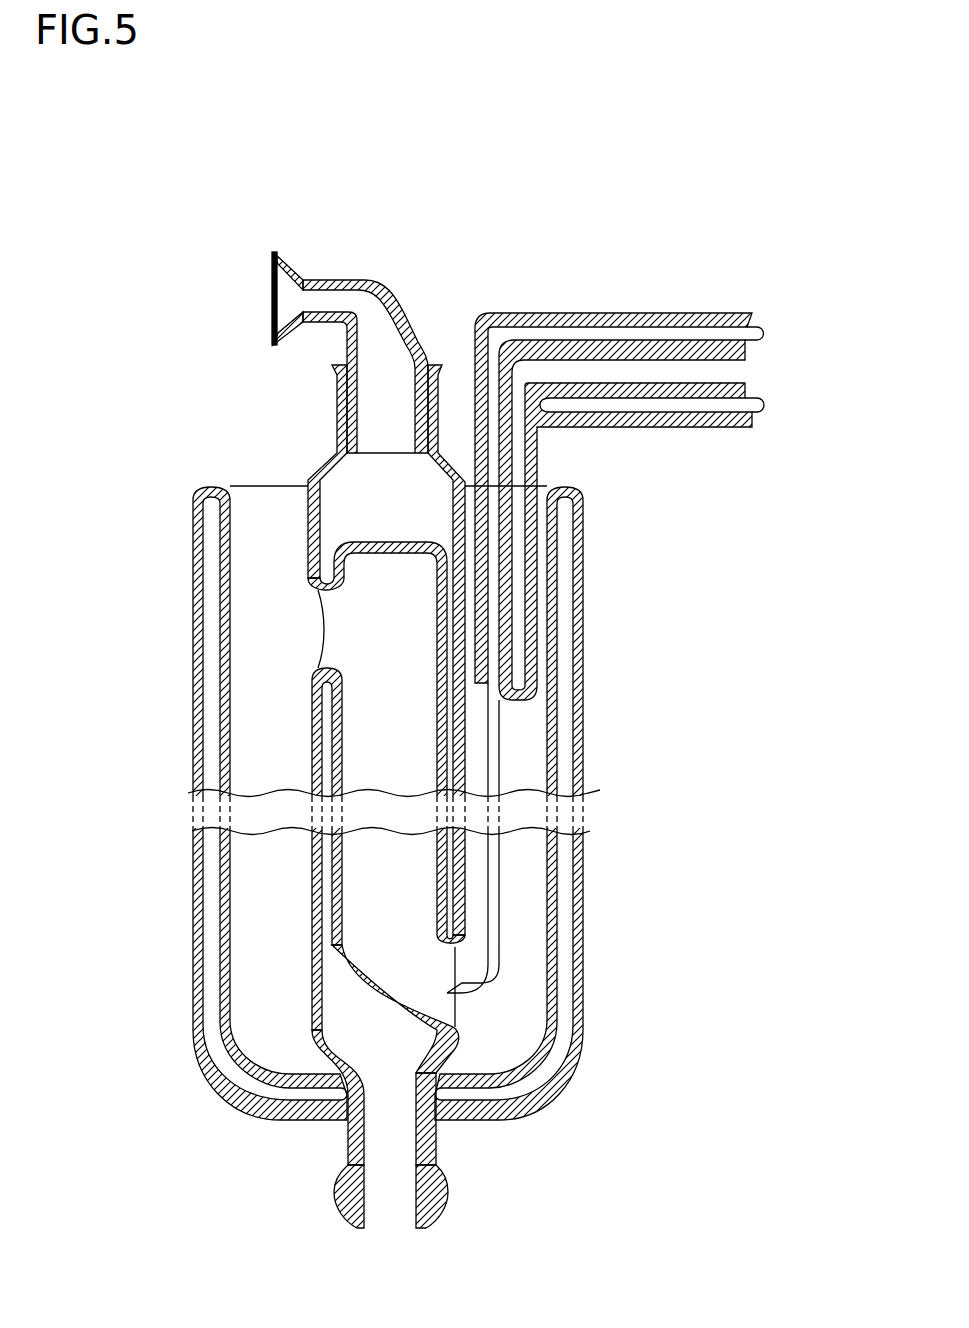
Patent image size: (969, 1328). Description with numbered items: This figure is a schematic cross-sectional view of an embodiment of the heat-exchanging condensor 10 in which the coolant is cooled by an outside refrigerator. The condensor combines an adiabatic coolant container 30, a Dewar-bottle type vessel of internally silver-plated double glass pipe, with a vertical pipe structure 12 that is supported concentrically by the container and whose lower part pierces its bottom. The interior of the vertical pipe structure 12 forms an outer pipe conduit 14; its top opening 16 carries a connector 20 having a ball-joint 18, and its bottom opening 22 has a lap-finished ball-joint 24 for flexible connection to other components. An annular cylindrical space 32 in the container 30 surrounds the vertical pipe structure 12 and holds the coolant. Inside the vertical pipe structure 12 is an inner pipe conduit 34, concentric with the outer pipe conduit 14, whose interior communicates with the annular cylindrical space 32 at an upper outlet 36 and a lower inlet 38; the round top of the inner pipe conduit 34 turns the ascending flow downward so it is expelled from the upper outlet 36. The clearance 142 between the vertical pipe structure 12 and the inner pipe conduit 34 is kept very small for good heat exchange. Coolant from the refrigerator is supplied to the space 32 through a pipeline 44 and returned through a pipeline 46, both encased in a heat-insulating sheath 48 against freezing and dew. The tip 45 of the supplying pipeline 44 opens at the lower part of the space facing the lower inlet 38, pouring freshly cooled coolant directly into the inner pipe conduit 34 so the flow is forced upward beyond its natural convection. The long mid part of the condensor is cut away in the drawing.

The heat-exchanging condensor 10 is at (263, 268).
The vertical pipe structure 12 is at (320, 468).
The outer pipe conduit 14 is at (307, 548).
The top opening 16 is at (380, 467).
The ball-joint 18 is at (277, 318).
The connector 20 is at (395, 302).
The bottom opening 22 is at (417, 1203).
The ball-joint 24 is at (443, 1193).
The adiabatic coolant container 30 is at (193, 686).
The annular cylindrical space 32 is at (253, 752).
The inner pipe conduit 34 is at (425, 790).
The upper outlet 36 is at (337, 620).
The lower inlet 38 is at (417, 997).
The pipeline 44 is at (497, 723).
The tip 45 is at (497, 957).
The pipeline 46 is at (518, 625).
The sheath 48 is at (597, 390).
The clearance 142 is at (450, 745).